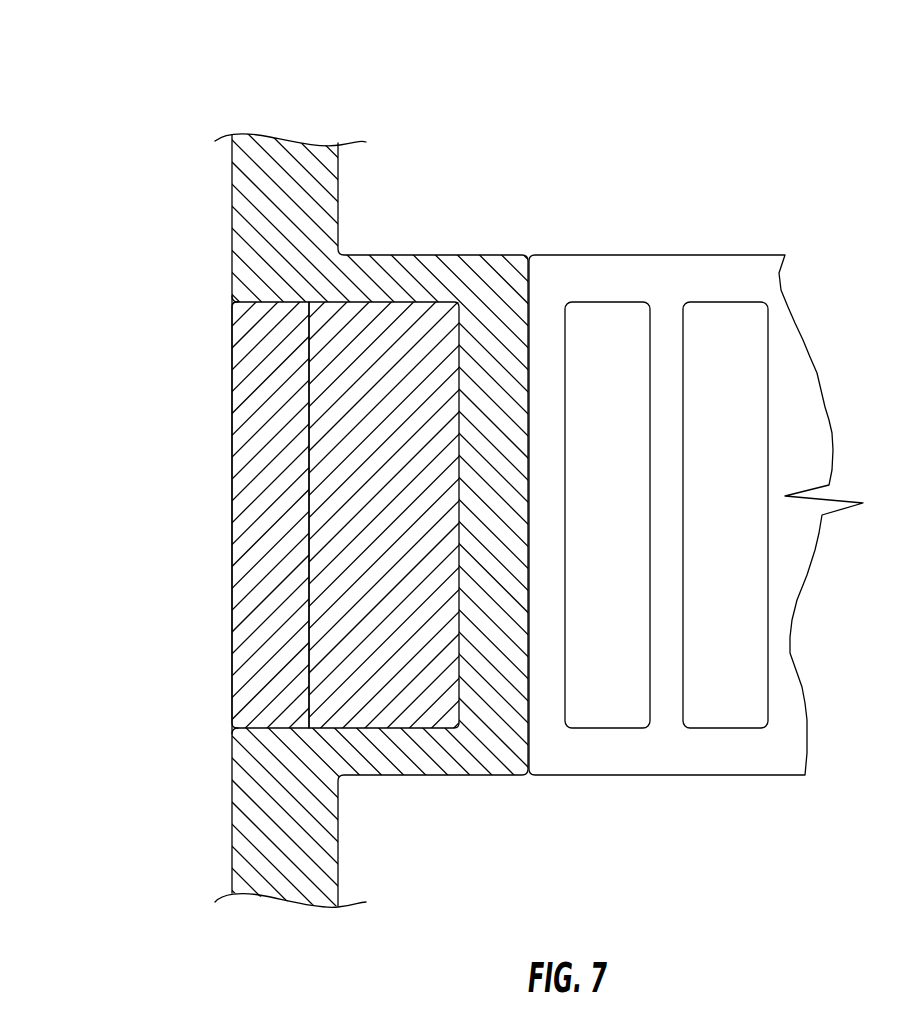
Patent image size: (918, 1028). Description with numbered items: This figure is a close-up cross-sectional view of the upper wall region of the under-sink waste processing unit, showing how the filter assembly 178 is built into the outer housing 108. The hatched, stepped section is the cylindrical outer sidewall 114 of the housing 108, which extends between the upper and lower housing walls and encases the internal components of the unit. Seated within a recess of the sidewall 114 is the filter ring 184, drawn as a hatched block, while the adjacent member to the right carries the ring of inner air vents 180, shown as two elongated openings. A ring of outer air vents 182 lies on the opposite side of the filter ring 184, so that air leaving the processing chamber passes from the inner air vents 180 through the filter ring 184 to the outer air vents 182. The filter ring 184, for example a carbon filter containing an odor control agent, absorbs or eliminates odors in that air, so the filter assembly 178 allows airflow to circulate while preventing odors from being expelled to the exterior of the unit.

The outer housing 108 is at (220, 165).
The cylindrical outer sidewall 114 is at (290, 157).
The filter assembly 178 is at (88, 300).
The inner air vents 180 is at (728, 322).
The outer air vents 182 is at (267, 640).
The filter ring 184 is at (345, 518).